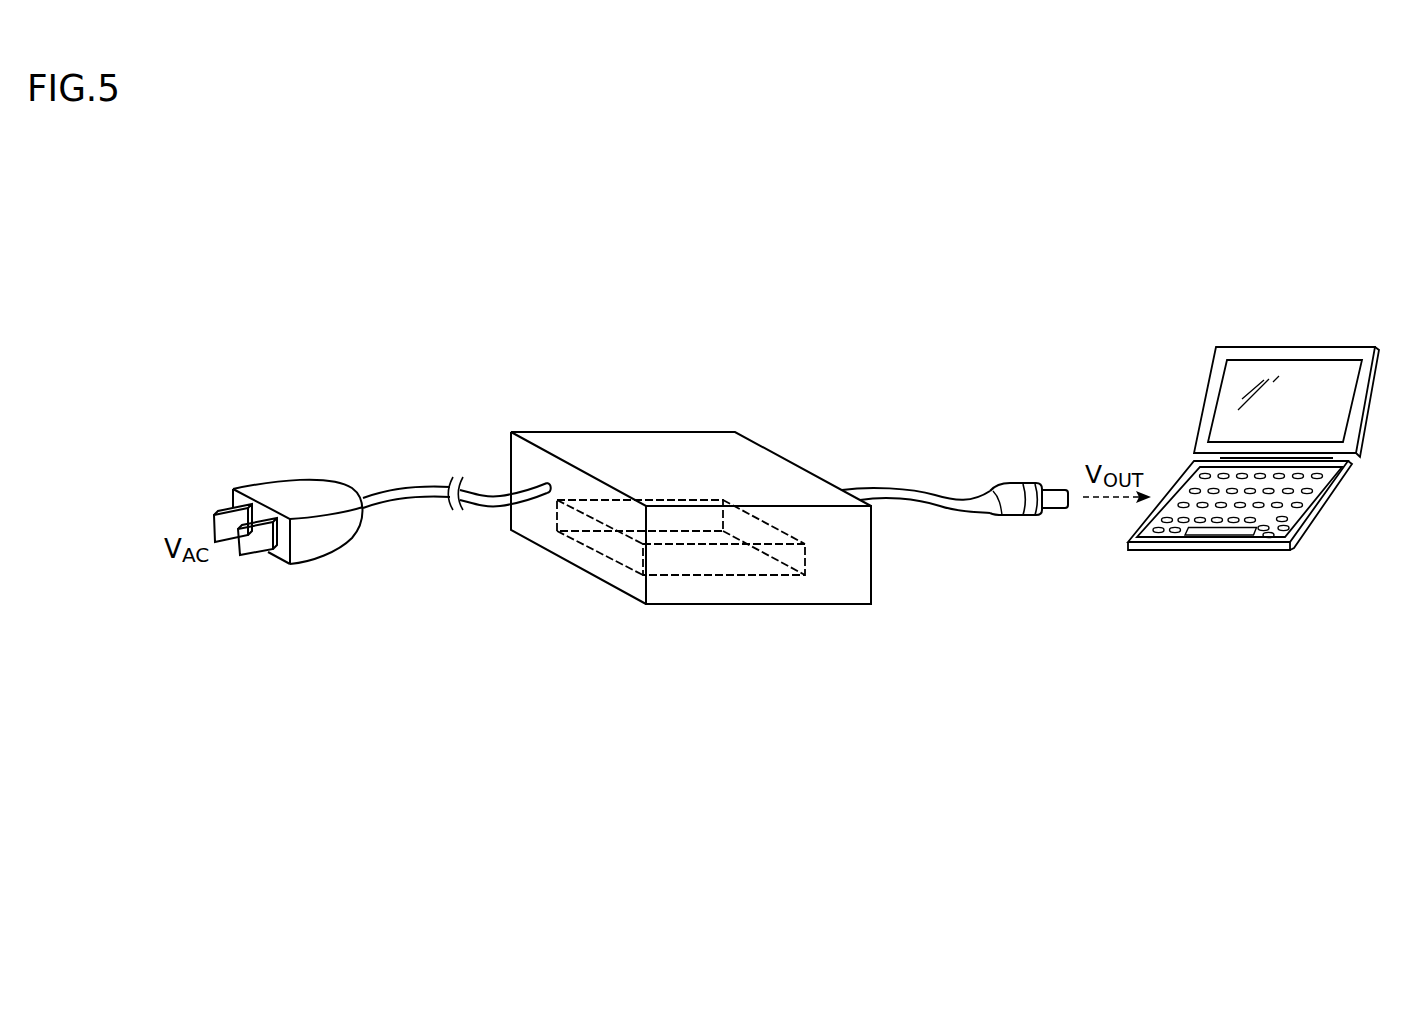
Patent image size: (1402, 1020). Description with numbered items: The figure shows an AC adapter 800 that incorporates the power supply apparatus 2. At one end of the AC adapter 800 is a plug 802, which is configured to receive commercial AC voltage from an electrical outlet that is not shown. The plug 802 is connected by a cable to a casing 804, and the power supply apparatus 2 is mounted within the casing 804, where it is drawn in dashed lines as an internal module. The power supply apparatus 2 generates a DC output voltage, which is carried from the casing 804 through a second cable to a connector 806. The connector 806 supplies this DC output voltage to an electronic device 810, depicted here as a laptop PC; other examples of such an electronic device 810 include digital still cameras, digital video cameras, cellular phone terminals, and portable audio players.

The AC adapter 800 is at (760, 795).
The plug 802 is at (297, 496).
The casing 804 is at (615, 431).
The power supply apparatus 2 is at (713, 560).
The connector 806 is at (1014, 487).
The electronic device 810 is at (1308, 346).